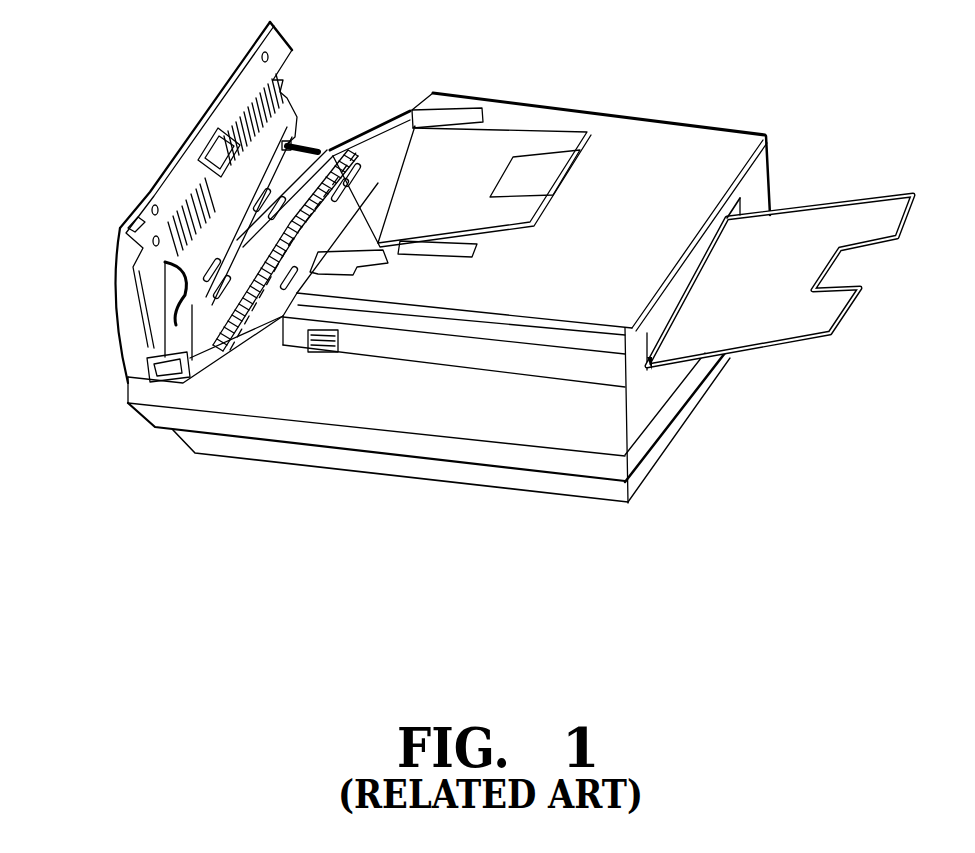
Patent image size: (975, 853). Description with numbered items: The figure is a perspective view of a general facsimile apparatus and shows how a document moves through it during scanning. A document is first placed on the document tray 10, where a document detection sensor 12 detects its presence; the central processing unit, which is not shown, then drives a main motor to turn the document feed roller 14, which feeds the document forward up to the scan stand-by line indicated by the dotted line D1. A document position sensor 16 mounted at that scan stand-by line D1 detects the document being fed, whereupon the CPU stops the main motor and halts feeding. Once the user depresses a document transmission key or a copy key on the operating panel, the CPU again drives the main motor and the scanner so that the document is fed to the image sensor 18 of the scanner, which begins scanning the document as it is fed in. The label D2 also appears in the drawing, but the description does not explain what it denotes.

The document tray 10 is at (530, 138).
The document detection sensor 12 is at (243, 100).
The document feed roller 14 is at (267, 220).
The document position sensor 16 is at (313, 147).
The image sensor 18 is at (193, 327).
The scan stand-by line D1 is at (215, 338).
The second direction D2 is at (273, 91).